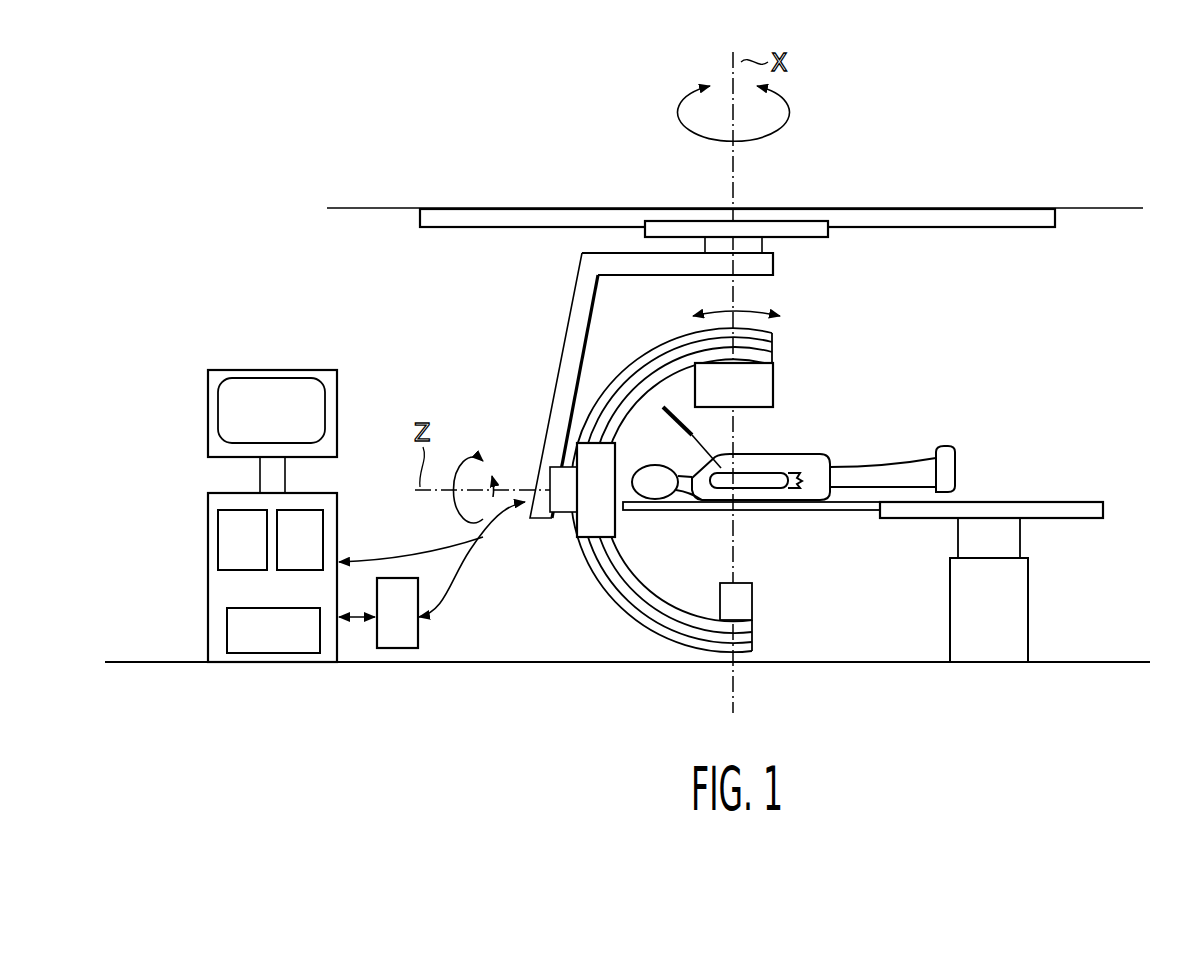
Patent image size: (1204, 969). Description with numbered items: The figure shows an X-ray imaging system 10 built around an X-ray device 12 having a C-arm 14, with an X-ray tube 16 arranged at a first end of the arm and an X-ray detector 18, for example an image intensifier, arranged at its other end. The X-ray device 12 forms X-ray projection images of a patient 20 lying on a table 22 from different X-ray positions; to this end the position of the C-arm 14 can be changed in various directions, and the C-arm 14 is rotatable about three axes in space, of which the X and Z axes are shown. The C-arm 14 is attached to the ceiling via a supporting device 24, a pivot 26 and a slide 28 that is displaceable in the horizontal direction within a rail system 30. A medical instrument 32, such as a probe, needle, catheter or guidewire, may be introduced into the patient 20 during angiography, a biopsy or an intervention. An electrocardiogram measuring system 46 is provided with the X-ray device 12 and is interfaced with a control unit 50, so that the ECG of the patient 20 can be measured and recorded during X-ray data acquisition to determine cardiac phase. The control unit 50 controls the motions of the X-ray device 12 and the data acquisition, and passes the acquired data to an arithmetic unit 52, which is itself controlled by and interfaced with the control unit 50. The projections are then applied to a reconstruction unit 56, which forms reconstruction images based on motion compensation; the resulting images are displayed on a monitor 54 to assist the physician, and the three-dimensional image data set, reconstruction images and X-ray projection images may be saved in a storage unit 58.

The system 10 is at (867, 583).
The X-ray device 12 is at (510, 624).
The C-arm 14 is at (614, 602).
The X-ray tube 16 is at (752, 605).
The X-ray detector 18 is at (773, 388).
The patient 20 is at (820, 452).
The table 22 is at (1083, 503).
The supporting device 24 is at (563, 345).
The pivot 26 is at (778, 247).
The slide 28 is at (813, 211).
The rail system 30 is at (980, 228).
The medical instrument 32 is at (694, 420).
The electrocardiogram (ECG) measuring system 46 is at (409, 626).
The control unit 50 is at (234, 577).
The arithmetic unit 52 is at (312, 551).
The monitor 54 is at (208, 438).
The reconstruction unit 56 is at (254, 551).
The storage unit 58 is at (284, 646).